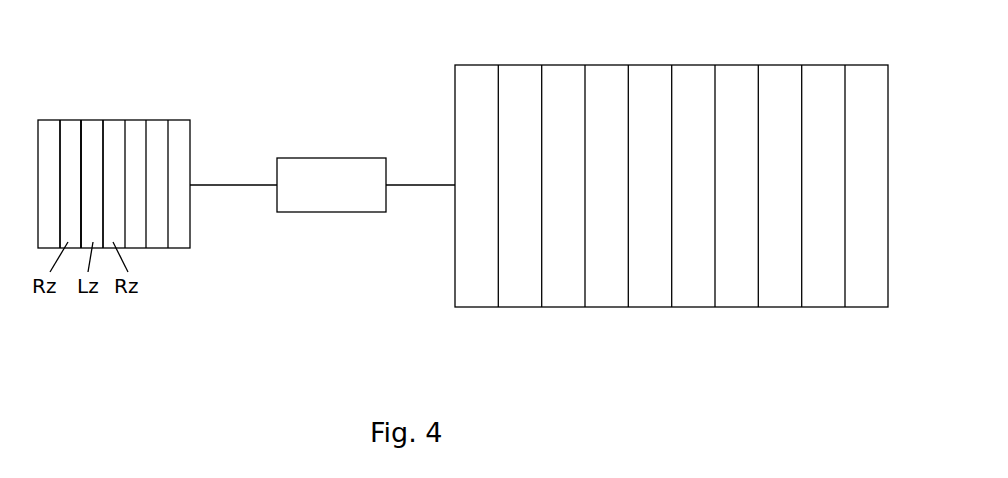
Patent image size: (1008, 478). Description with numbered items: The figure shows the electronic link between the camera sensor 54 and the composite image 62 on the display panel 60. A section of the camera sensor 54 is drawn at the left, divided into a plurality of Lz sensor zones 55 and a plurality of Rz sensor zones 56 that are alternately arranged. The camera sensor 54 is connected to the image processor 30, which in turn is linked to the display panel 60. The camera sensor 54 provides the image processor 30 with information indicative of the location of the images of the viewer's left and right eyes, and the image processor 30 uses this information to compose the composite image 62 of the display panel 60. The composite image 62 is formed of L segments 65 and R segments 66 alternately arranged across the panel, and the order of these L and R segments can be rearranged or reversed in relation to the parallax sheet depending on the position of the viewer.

The image processor 30 is at (324, 167).
The camera sensor 54 is at (190, 232).
The Lz sensor zones 55 is at (91, 130).
The Rz sensor zones 56 is at (73, 130).
The display panel 60 is at (640, 190).
The composite image 62 is at (451, 259).
The L segments 65 is at (482, 72).
The R segments 66 is at (520, 72).